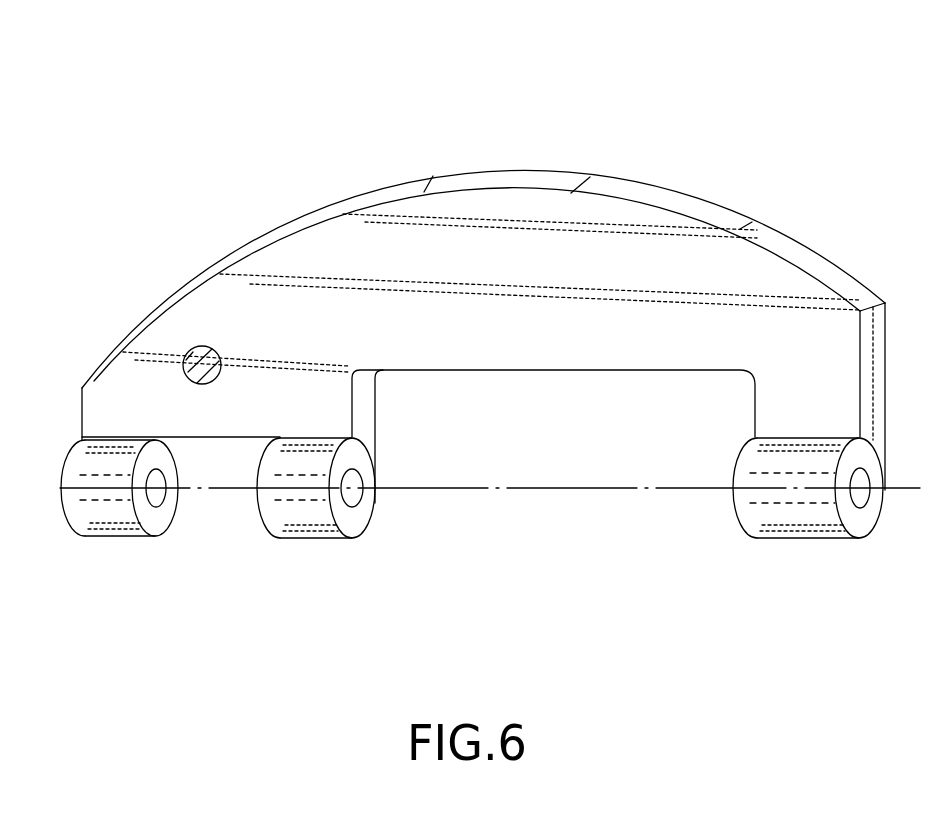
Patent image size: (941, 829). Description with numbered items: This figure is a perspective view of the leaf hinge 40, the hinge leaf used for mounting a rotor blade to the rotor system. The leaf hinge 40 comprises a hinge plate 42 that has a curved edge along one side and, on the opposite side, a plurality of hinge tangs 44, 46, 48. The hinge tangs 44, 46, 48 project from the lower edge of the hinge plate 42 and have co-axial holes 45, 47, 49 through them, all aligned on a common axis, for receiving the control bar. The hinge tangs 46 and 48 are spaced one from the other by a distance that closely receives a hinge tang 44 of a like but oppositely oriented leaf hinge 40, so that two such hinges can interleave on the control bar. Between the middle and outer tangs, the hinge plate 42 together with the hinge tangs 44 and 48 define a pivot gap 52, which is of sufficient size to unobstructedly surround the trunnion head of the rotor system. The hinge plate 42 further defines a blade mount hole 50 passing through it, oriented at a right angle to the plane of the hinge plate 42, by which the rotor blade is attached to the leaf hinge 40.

The leaf hinge 40 is at (552, 70).
The hinge plate 42 is at (743, 218).
The hinge tang 44 is at (742, 530).
The co-axial hole 45 is at (865, 470).
The hinge tang 46 is at (273, 528).
The co-axial hole 47 is at (358, 510).
The hinge tang 48 is at (73, 530).
The co-axial hole 49 is at (160, 510).
The blade mount hole 50 is at (208, 347).
The pivot gap 52 is at (518, 448).